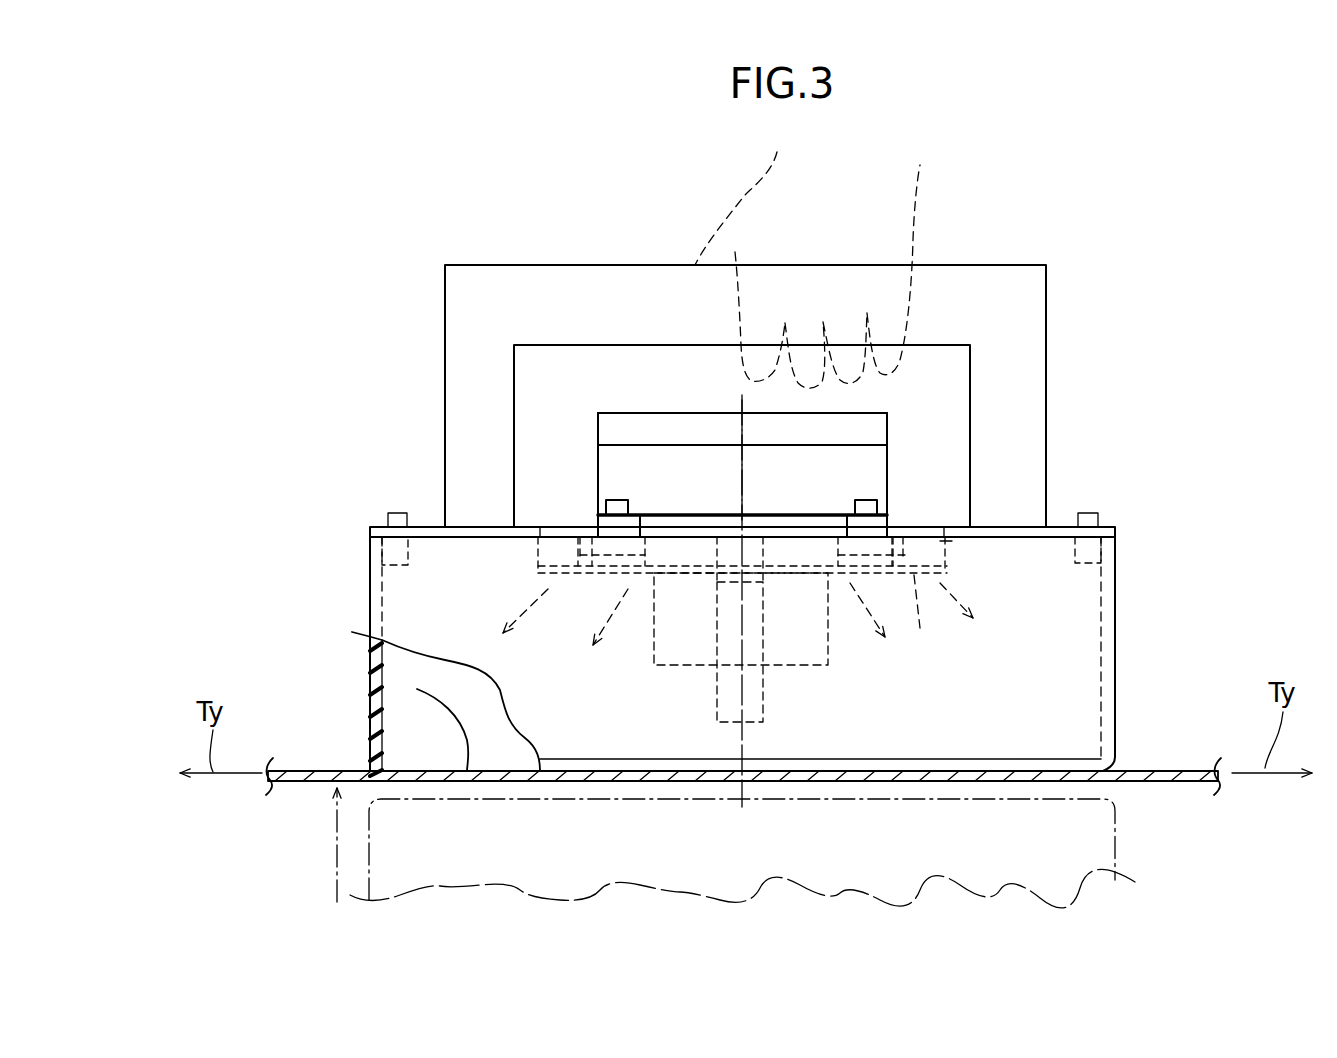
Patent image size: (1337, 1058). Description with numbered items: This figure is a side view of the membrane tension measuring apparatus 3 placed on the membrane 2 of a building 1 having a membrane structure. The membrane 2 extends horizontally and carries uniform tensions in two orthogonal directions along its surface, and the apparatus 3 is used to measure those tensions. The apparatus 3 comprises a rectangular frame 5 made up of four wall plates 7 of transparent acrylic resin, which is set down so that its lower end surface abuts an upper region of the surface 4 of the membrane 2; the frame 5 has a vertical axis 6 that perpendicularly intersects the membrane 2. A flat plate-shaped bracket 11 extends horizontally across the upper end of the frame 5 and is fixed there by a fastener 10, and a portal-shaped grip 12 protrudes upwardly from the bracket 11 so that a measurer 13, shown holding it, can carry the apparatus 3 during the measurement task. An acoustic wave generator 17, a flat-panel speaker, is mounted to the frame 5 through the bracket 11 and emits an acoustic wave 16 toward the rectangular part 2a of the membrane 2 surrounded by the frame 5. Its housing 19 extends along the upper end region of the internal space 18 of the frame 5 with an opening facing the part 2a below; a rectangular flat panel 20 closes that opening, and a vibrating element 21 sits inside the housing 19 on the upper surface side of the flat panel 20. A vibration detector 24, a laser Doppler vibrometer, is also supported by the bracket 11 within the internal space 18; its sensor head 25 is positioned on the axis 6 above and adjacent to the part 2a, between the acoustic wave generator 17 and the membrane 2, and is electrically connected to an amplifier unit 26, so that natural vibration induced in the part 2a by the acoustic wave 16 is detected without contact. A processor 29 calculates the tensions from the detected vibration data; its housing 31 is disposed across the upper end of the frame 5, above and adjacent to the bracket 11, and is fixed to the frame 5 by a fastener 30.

The building 1 is at (1190, 733).
The membrane 2 is at (1140, 765).
The rectangular part of the membrane 2a is at (433, 692).
The membrane tension measuring apparatus 3 is at (1112, 353).
The surface of the membrane 4 is at (396, 701).
The rectangular frame 5 is at (368, 560).
The axis 6 is at (742, 460).
The wall plates 7 is at (425, 608).
The fastener 10 is at (392, 512).
The bracket 11 is at (473, 527).
The grip 12 is at (537, 295).
The measurer 13 is at (912, 212).
The acoustic wave 16 is at (955, 600).
The acoustic wave generator 17 is at (787, 577).
The internal space of the frame 18 is at (415, 727).
The housing of the acoustic wave generator 19 is at (948, 543).
The flat panel 20 is at (934, 621).
The vibrating element 21 is at (578, 527).
The vibration detector 24 is at (691, 655).
The sensor head 25 is at (717, 704).
The amplifier unit 26 is at (685, 667).
The processor 29 is at (705, 413).
The fastener 30 is at (630, 512).
The housing of the processor 31 is at (660, 460).